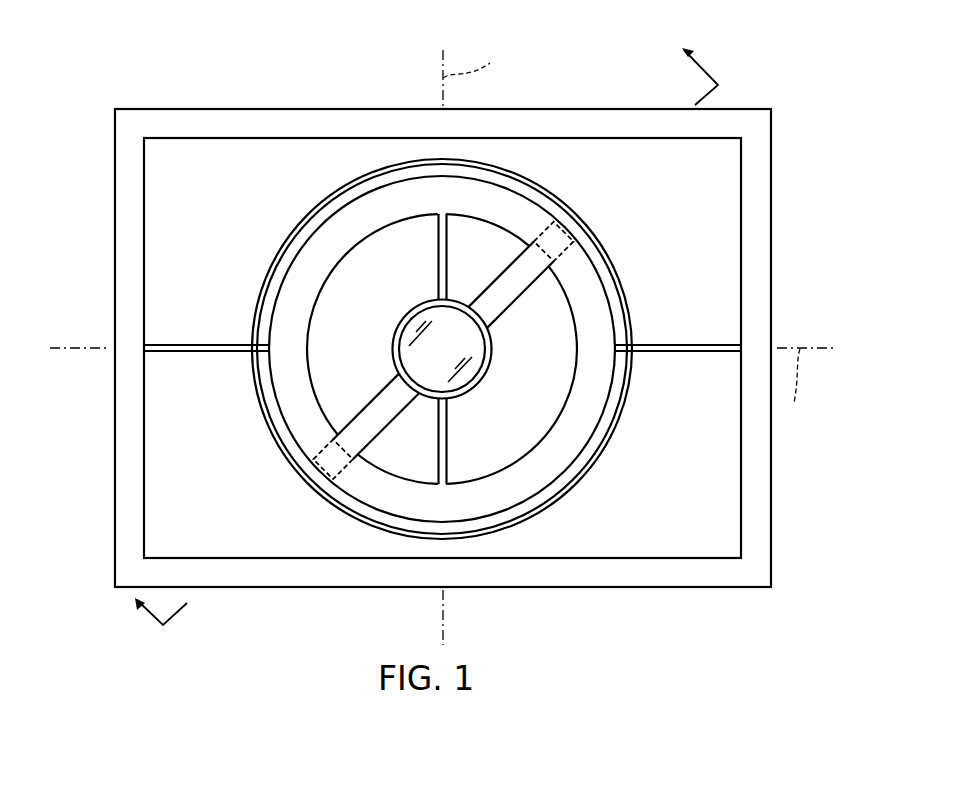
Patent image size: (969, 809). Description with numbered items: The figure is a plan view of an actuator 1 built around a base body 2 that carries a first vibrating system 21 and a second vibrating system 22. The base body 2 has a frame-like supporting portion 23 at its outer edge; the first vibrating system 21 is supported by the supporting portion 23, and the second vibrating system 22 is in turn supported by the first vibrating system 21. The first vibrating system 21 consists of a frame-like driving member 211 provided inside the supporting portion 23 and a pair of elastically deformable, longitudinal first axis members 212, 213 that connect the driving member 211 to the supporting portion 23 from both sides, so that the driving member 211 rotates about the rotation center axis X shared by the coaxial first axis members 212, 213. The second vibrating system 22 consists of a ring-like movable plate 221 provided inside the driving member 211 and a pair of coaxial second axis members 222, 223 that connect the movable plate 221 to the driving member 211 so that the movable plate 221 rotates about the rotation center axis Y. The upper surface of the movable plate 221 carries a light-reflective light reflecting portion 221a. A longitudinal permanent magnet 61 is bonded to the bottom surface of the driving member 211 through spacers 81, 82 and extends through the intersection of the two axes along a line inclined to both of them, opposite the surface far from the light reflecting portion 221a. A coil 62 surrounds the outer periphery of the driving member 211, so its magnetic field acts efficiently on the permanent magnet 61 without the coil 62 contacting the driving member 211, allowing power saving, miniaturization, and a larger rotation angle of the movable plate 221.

The actuator 1 is at (786, 161).
The base body 2 is at (775, 243).
The first vibrating system 21 is at (615, 627).
The driving member 211 is at (507, 492).
The first axis member 212 is at (210, 350).
The first axis member 213 is at (655, 355).
The second vibrating system 22 is at (62, 163).
The movable plate 221 is at (397, 330).
The light reflecting portion 221a is at (472, 348).
The second axis member 222 is at (440, 247).
The second axis member 223 is at (440, 433).
The supporting portion 23 is at (216, 122).
The permanent magnet 61 is at (508, 295).
The coil 62 is at (622, 298).
The spacer 81 is at (323, 465).
The spacer 82 is at (572, 230).